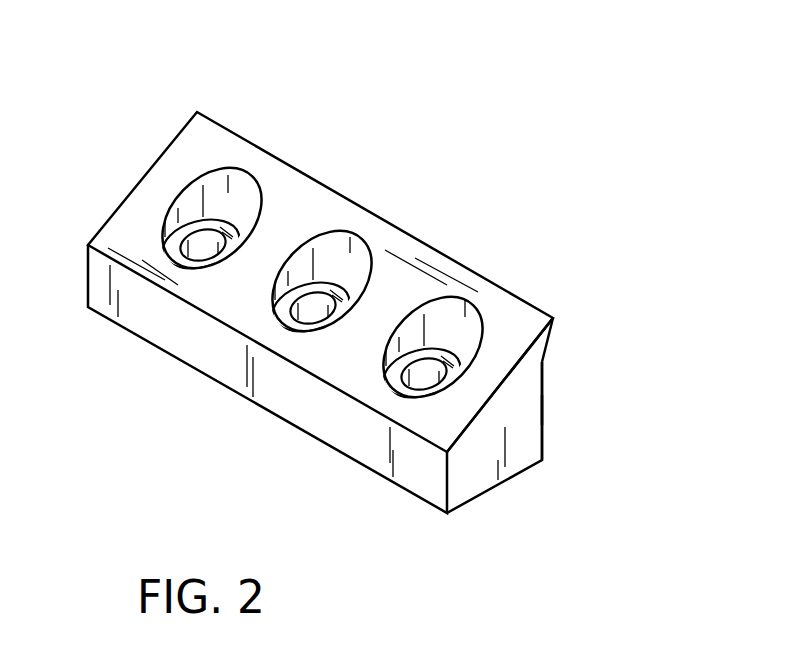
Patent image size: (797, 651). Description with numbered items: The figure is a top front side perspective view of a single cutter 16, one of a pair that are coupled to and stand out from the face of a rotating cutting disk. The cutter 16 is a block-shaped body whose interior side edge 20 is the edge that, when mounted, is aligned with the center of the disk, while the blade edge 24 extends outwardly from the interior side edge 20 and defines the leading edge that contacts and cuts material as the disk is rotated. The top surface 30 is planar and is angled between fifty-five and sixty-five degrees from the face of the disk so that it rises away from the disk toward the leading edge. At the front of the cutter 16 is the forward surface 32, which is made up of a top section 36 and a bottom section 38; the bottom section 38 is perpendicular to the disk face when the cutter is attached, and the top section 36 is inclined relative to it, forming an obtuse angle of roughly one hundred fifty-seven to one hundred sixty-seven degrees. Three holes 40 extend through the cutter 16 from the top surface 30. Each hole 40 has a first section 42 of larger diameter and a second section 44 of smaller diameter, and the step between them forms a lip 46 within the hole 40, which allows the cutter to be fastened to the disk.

The cutter 16 is at (92, 160).
The interior side edge 20 is at (513, 437).
The blade edge 24 is at (523, 297).
The top surface 30 is at (293, 200).
The forward surface 32 is at (572, 377).
The top section 36 is at (543, 410).
The bottom section 38 is at (552, 345).
The hole 40 is at (228, 167).
The first section 42 is at (317, 262).
The second section 44 is at (313, 310).
The lip 46 is at (287, 308).